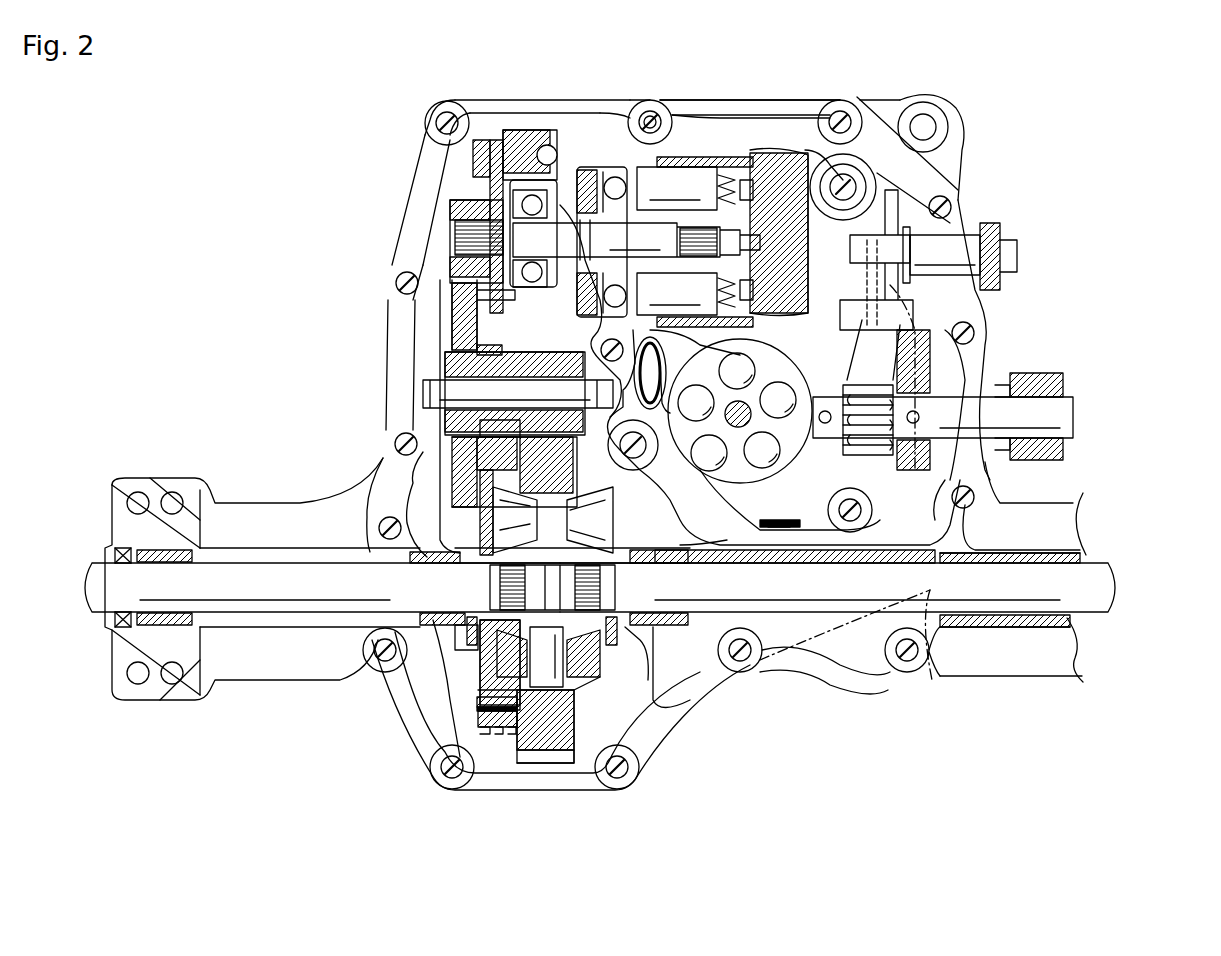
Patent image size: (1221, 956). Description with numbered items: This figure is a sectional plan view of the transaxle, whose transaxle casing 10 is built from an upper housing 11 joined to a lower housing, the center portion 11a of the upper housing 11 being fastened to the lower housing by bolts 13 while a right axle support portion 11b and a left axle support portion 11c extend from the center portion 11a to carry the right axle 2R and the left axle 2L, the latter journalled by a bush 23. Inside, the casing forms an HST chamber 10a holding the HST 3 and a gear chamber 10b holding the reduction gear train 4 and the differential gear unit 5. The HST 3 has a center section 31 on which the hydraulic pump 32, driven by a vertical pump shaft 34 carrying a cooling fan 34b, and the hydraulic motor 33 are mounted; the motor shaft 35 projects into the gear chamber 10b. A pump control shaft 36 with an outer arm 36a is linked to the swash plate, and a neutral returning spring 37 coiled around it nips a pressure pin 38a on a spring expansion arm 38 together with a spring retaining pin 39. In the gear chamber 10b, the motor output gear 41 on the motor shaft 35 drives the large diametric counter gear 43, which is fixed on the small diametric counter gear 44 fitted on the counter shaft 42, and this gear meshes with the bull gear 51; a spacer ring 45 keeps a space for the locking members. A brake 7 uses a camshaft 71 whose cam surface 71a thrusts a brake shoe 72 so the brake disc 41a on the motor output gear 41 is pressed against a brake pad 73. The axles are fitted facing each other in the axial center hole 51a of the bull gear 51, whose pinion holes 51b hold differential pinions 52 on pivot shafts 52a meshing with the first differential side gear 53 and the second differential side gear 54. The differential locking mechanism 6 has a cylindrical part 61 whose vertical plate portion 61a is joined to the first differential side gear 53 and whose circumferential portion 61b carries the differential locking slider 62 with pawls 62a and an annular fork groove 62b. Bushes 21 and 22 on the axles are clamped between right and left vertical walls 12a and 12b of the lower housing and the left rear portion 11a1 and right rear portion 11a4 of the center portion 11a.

The transaxle casing 10 is at (247, 216).
The upper housing 11 is at (395, 262).
The HST chamber 10a is at (780, 135).
The gear chamber 10b is at (420, 220).
The HST 3 is at (845, 150).
The hydraulic motor 33 is at (722, 118).
The motor shaft 35 is at (590, 170).
The bolts 13 is at (650, 108).
The brake 7 is at (534, 110).
The cam surface 71a is at (530, 130).
The brake shoe 72 is at (503, 140).
The brake pad 73 is at (478, 140).
The camshaft 71 is at (540, 200).
The motor output gear 41 is at (455, 200).
The brake disc 41a is at (490, 140).
The reduction gear train 4 is at (433, 312).
The small diametric counter gear 44 is at (445, 360).
The spacer ring 45 is at (500, 380).
The counter shaft 42 is at (423, 390).
The large diametric counter gear 43 is at (452, 460).
The differential pinions 52 is at (600, 760).
The pivot shaft 52a is at (478, 692).
The bull gear 51 is at (572, 760).
The axial center hole 51a is at (600, 595).
The pinion holes 51b is at (580, 770).
The differential locking slider 62 is at (520, 765).
The pawls 62a is at (555, 790).
The annular fork groove 62b is at (497, 764).
The cylindrical part 61 is at (480, 715).
The vertical plate portion 61a is at (448, 520).
The circumferential portion 61b is at (478, 725).
The differential locking mechanism 6 is at (500, 765).
The differential gear unit 5 is at (625, 740).
The second differential side gear 54 is at (650, 690).
The right vertical wall 12a is at (655, 685).
The left vertical wall 12b is at (440, 670).
The first differential side gear 53 is at (455, 648).
The bush 21 is at (660, 565).
The bush 22 is at (435, 575).
The left axle 2L is at (240, 598).
The right axle 2R is at (990, 603).
The bush 23 is at (138, 548).
The left axle support portion 11c is at (262, 520).
The center section 31 is at (950, 245).
The spring retaining pin 39 is at (950, 248).
The pressure pin 38a is at (855, 310).
The neutral returning spring 37 is at (975, 320).
The spring expansion arm 38 is at (960, 370).
The pump control shaft 36 is at (1075, 415).
The arm 36a is at (1048, 380).
The pump shaft 34 is at (745, 400).
The cooling fan 34b is at (932, 680).
The hydraulic pump 32 is at (782, 508).
The center portion 11a is at (985, 305).
The right axle support portion 11b is at (1053, 660).
The left rear portion 11a1 is at (585, 780).
The right rear portion 11a4 is at (855, 690).